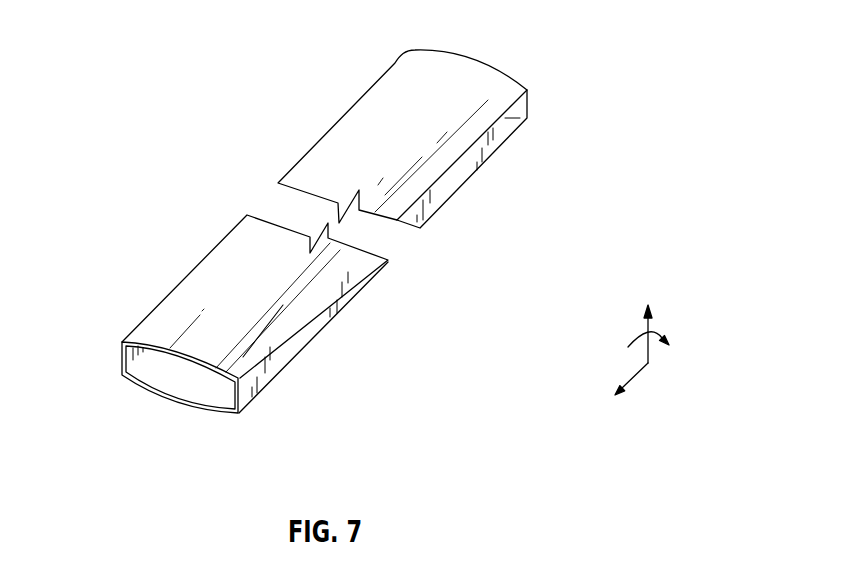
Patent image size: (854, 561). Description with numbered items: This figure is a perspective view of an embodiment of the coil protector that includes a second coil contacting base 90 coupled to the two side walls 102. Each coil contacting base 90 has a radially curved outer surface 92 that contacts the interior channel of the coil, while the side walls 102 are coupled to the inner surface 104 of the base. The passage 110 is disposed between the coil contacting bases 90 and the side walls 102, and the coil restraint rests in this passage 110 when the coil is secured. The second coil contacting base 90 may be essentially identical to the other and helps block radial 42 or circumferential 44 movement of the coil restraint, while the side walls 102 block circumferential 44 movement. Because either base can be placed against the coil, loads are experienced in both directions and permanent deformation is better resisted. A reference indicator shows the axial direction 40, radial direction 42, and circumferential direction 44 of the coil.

The coil contacting base 90 is at (499, 68).
The outer surface 92 is at (427, 67).
The side walls 102 is at (122, 360).
The inner surface 104 is at (148, 381).
The passage 110 is at (181, 391).
The axial axis 40 is at (635, 378).
The radial axis 42 is at (653, 348).
The circumferential axis 44 is at (637, 335).